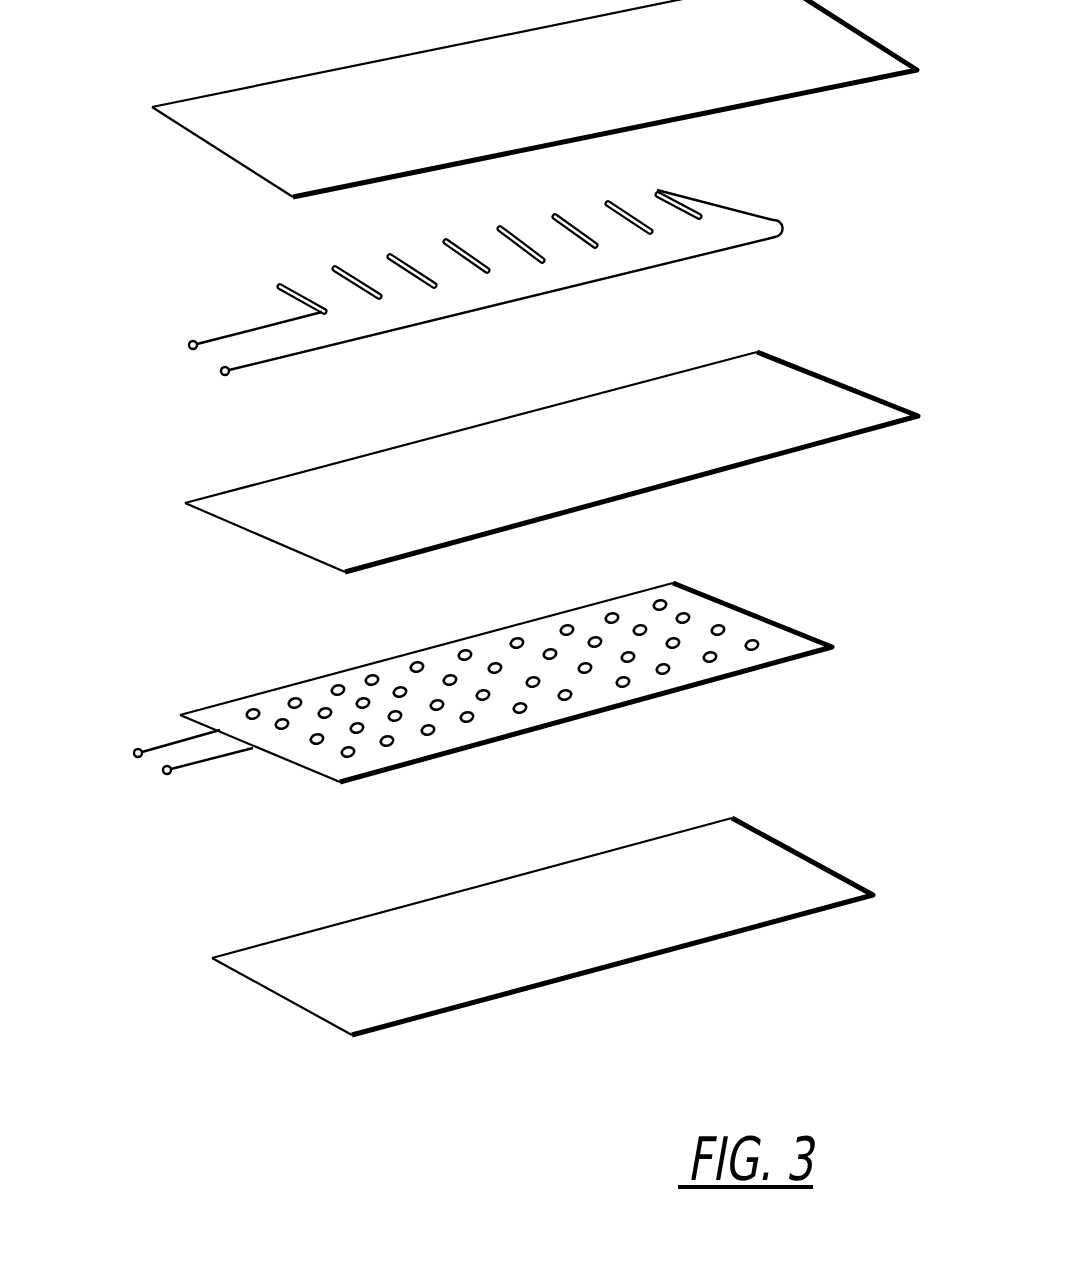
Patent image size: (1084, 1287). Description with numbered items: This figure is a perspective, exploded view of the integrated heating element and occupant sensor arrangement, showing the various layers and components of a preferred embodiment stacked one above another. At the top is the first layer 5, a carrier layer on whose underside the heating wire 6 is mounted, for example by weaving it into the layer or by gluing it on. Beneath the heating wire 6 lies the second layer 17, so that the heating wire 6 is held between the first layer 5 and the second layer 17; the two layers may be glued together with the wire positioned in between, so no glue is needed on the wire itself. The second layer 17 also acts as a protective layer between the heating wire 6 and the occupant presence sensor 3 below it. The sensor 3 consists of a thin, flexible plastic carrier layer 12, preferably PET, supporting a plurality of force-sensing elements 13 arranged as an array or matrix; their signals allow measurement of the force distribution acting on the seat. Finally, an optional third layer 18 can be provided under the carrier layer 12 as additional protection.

The occupant presence sensor 3 is at (770, 596).
The first layer 5 is at (230, 140).
The heating wire 6 is at (283, 282).
The second layer 17 is at (262, 528).
The carrier layer 12 is at (227, 712).
The force-sensing elements 13 is at (368, 678).
The third layer 18 is at (293, 982).